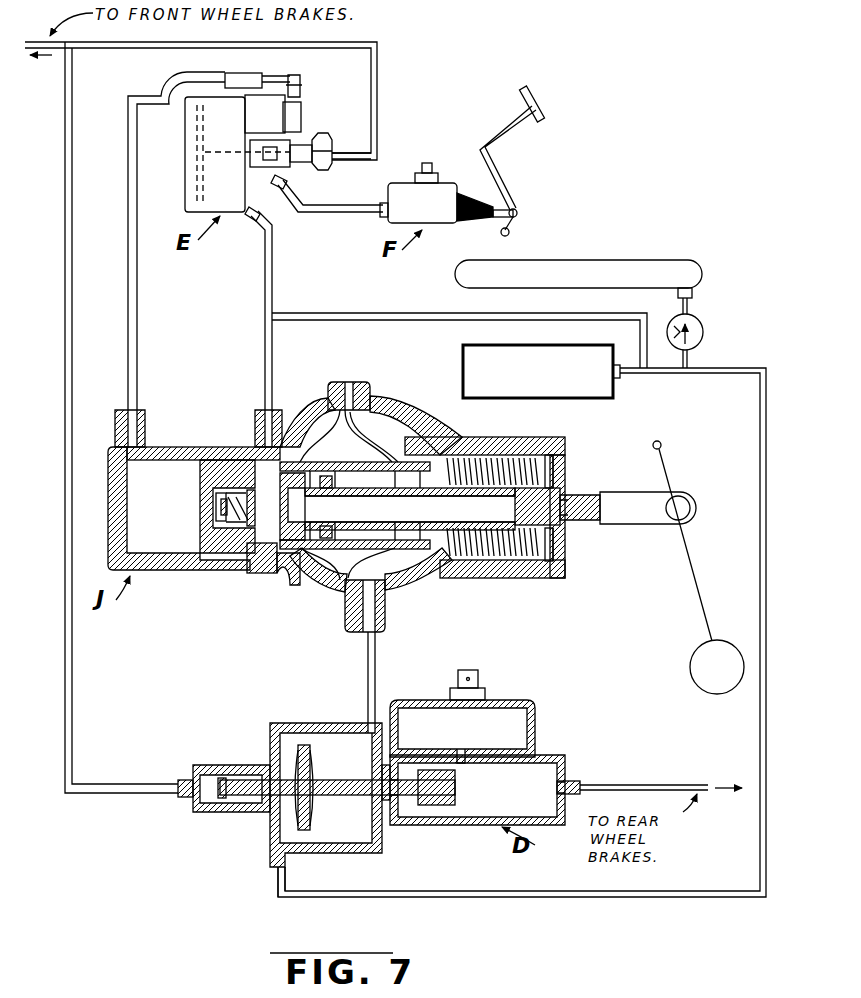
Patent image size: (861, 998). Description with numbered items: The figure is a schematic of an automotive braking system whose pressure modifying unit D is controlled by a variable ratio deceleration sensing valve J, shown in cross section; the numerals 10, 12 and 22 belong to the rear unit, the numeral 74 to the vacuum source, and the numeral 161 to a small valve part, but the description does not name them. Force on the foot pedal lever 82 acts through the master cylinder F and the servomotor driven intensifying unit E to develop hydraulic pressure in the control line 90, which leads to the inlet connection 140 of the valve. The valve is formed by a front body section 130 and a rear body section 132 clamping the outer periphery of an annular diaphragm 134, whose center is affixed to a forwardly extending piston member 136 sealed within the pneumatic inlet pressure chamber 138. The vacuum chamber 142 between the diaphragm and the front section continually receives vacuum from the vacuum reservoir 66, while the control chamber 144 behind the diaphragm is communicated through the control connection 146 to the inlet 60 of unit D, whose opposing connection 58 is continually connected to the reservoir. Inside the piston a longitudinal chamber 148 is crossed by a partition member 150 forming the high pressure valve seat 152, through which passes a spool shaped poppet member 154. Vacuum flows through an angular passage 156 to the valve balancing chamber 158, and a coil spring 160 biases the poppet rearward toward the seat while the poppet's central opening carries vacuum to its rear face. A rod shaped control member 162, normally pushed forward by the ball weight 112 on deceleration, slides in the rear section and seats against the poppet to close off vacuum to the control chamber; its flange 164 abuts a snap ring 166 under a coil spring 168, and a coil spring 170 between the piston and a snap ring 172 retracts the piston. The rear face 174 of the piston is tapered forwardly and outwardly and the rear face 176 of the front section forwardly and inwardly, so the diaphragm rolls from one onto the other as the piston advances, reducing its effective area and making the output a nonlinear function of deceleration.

The master cylinder 10 is at (246, 803).
The piston 12 is at (456, 791).
The disc valve 22 is at (312, 766).
The opposing connection 58 is at (428, 891).
The inlet 60 is at (378, 672).
The vacuum reservoir 66 is at (473, 351).
The vacuum canister 74 is at (585, 263).
The foot pedal lever 82 is at (543, 100).
The control line 90 is at (138, 326).
The ball weight 112 is at (692, 678).
The front body section 130 is at (186, 572).
The rear body section 132 is at (543, 591).
The annular diaphragm 134 is at (348, 440).
The piston member 136 is at (214, 449).
The pneumatic inlet pressure chamber 138 is at (215, 501).
The inlet connection 140 is at (134, 412).
The vacuum chamber 142 is at (291, 585).
The control chamber 144 is at (380, 578).
The control connection 146 is at (377, 610).
The chamber 148 is at (313, 552).
The partition member 150 is at (292, 460).
The high pressure valve seat 152 is at (255, 470).
The spool shaped poppet member 154 is at (262, 575).
The angular passage 156 is at (232, 568).
The valve balancing chamber 158 is at (220, 514).
The coil spring 160 is at (222, 488).
The valve cup 161 is at (216, 522).
The control member 162 is at (642, 498).
The flange 164 is at (553, 540).
The snap ring 166 is at (568, 462).
The coil spring 168 is at (525, 454).
The coil spring 170 is at (382, 538).
The snap ring 172 is at (337, 482).
The rear face of the piston 174 is at (388, 446).
The rear face of the front housing section 176 is at (330, 418).